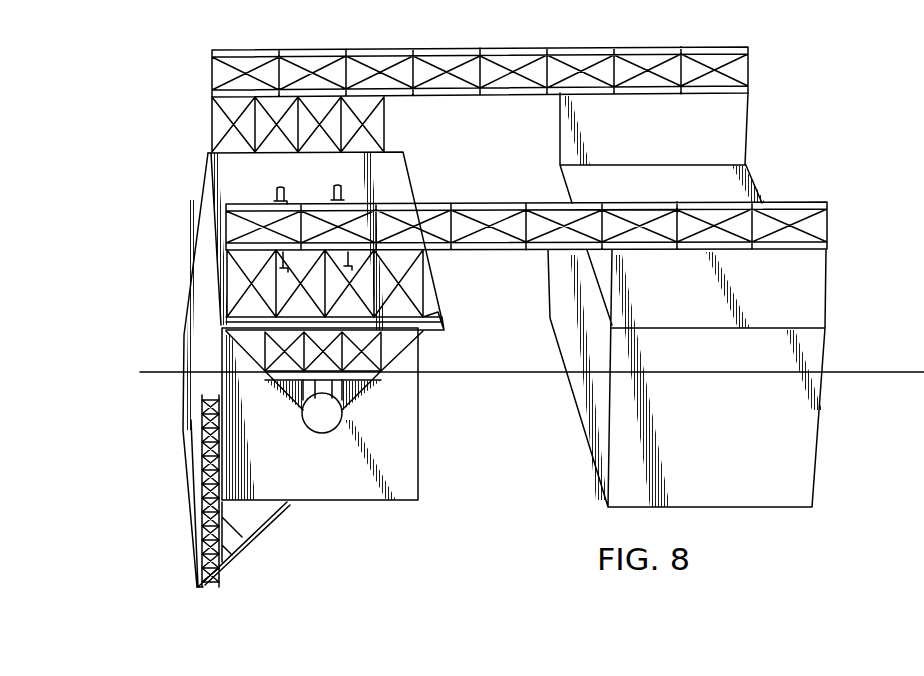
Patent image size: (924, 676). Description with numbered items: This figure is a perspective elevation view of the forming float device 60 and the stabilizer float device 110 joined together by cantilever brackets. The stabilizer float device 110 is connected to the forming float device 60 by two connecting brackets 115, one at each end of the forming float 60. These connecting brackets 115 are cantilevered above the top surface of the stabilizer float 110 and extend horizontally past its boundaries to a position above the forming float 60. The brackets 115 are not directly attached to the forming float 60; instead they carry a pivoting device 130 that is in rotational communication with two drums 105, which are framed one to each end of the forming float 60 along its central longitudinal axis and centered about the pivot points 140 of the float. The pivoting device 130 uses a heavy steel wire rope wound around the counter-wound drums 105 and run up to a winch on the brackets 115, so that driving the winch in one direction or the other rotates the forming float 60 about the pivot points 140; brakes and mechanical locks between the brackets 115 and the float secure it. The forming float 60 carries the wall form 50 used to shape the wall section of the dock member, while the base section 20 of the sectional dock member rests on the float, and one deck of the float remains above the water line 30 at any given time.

The base section 20 is at (400, 175).
The water line 30 is at (873, 372).
The wall form 50 is at (197, 572).
The forming float device 60 is at (203, 220).
The drum 105 is at (327, 427).
The stabilizer float device 110 is at (738, 187).
The connecting bracket 115 is at (750, 48).
The pivoting device 130 is at (370, 403).
The pivot point 140 is at (322, 417).